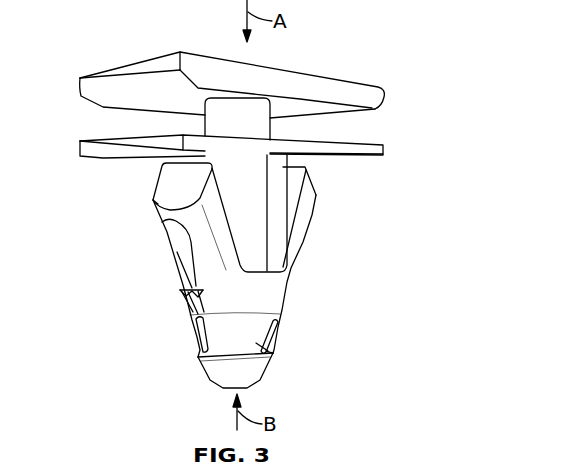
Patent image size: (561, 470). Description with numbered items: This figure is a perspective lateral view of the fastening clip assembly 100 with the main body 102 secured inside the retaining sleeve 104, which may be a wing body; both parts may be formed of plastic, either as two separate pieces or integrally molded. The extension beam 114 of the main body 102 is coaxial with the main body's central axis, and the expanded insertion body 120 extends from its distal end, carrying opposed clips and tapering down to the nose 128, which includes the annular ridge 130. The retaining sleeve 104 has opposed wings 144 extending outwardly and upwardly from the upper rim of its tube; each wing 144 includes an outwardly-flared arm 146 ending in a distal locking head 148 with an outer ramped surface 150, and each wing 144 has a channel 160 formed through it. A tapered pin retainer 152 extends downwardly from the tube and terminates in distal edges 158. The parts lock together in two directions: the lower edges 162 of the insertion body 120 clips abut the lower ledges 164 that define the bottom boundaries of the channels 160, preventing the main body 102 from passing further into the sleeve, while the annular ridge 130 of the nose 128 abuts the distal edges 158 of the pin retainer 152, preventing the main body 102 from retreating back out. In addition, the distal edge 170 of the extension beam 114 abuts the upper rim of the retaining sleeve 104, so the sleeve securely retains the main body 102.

The fastening clip assembly 100 is at (105, 41).
The main body 102 is at (341, 80).
The retaining sleeve 104 is at (269, 286).
The extension beam 114 is at (273, 165).
The insertion body 120 is at (183, 291).
The nose 128 is at (262, 371).
The annular ridge 130 is at (273, 354).
The wing 144 is at (162, 222).
The outwardly-flared arm 146 is at (176, 251).
The distal locking head 148 is at (153, 202).
The outer ramped surface 150 is at (168, 186).
The tapered pin retainer 152 is at (284, 320).
The distal edges 158 is at (279, 351).
The channel 160 is at (187, 273).
The edges 162 is at (184, 296).
The lower ledges 164 is at (189, 320).
The distal edge 170 is at (289, 287).